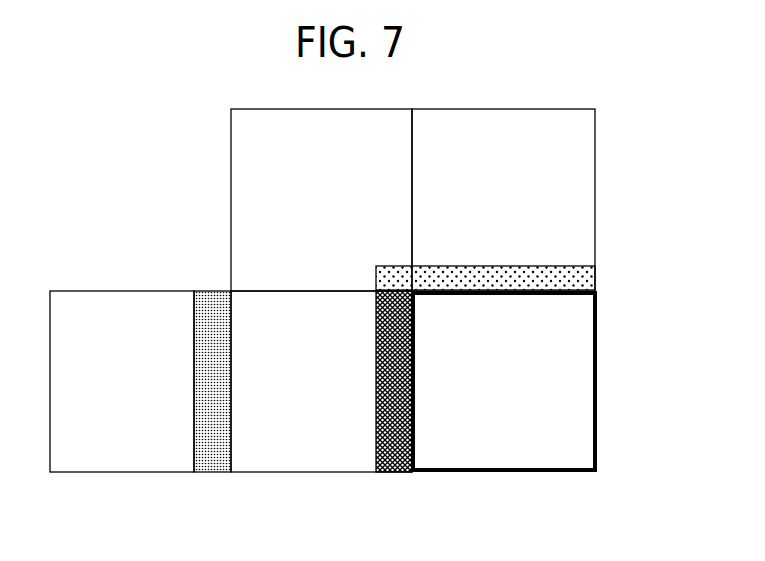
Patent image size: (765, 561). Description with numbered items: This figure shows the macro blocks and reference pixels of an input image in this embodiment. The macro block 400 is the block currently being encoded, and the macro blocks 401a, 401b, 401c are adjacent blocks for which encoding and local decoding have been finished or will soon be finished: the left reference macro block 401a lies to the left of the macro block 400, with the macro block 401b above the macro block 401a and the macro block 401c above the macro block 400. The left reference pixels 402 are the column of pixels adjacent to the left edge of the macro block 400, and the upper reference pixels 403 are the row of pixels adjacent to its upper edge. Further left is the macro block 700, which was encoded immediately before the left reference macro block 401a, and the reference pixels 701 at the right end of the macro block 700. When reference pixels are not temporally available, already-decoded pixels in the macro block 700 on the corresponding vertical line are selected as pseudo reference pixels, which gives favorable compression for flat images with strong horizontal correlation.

The macro block 700 is at (122, 381).
The reference pixels 701 is at (212, 458).
The left reference macro block 401a is at (321, 381).
The adjacent macro block 401b is at (321, 200).
The adjacent macro block 401c is at (503, 200).
The macro block currently being encoded 400 is at (504, 381).
The left reference pixels 402 is at (392, 460).
The upper reference pixels 403 is at (583, 278).